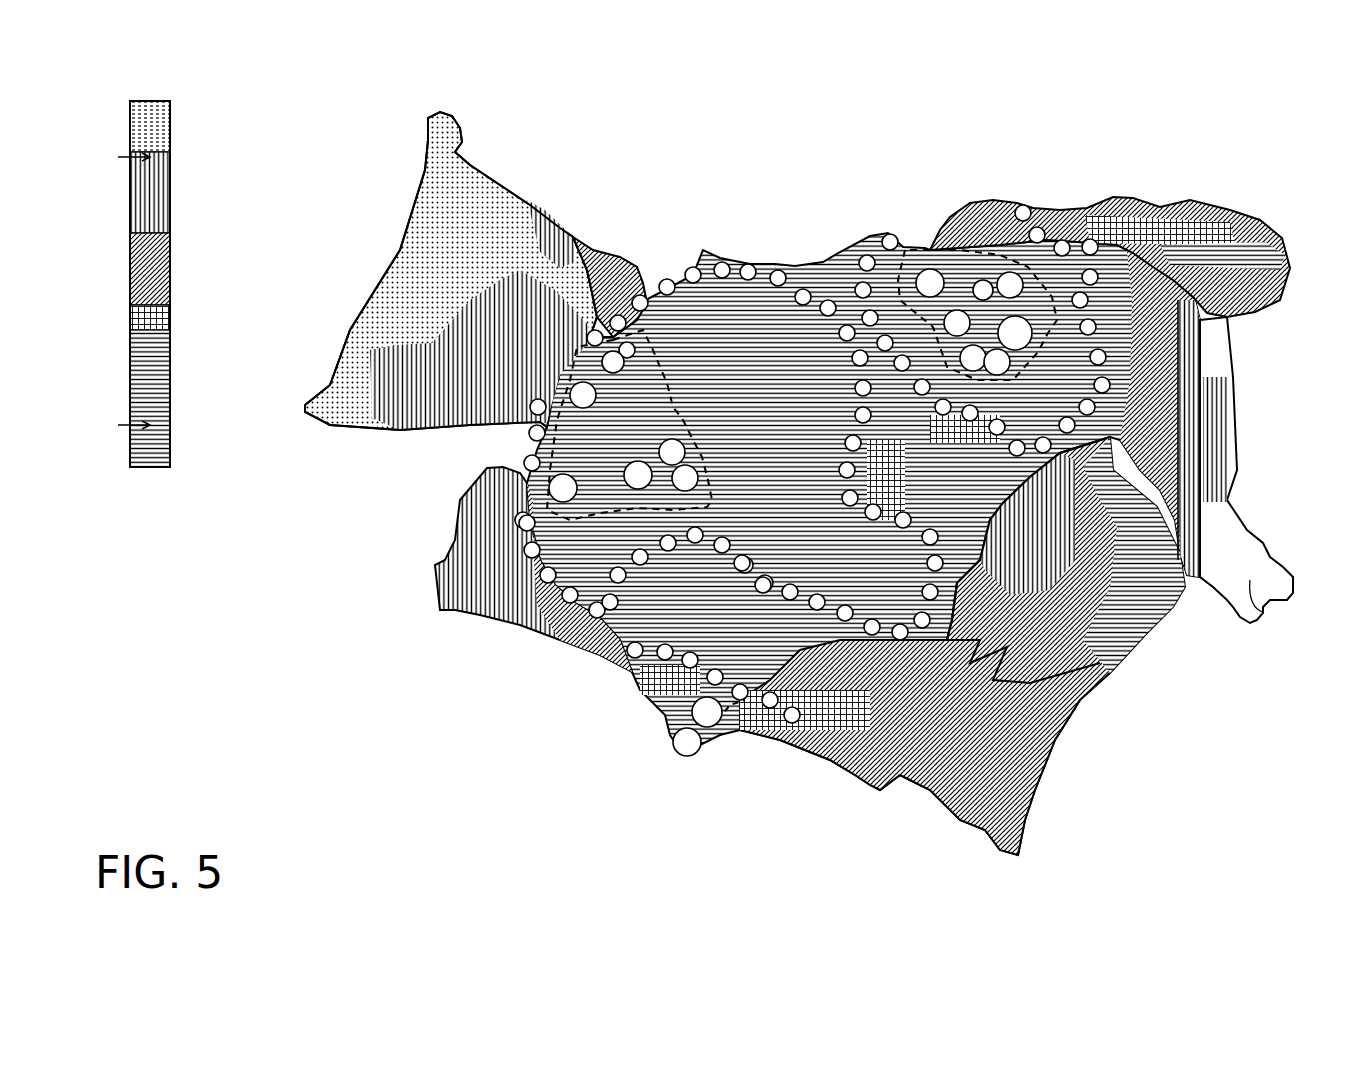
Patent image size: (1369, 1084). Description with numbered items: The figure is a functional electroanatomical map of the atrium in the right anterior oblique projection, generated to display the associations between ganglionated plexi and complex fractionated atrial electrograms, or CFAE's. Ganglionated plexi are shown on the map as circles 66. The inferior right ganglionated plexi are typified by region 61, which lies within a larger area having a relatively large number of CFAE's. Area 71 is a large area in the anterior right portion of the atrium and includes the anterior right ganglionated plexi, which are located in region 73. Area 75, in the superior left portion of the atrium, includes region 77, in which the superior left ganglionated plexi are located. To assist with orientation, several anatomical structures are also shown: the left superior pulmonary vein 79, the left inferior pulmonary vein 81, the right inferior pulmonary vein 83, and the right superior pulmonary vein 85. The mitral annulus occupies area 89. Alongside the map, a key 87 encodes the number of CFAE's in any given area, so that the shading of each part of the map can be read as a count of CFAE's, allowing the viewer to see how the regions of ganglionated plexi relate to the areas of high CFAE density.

The region 61 is at (676, 753).
The circles 66 is at (881, 242).
The area 71 is at (836, 618).
The region 73 is at (573, 237).
The area 75 is at (1085, 217).
The region 77 is at (921, 249).
The left superior pulmonary vein 79 is at (1237, 317).
The left inferior pulmonary vein 81 is at (1265, 613).
The right inferior pulmonary vein 83 is at (483, 563).
The right superior pulmonary vein 85 is at (445, 255).
The key 87 is at (200, 124).
The area 89 is at (1100, 655).